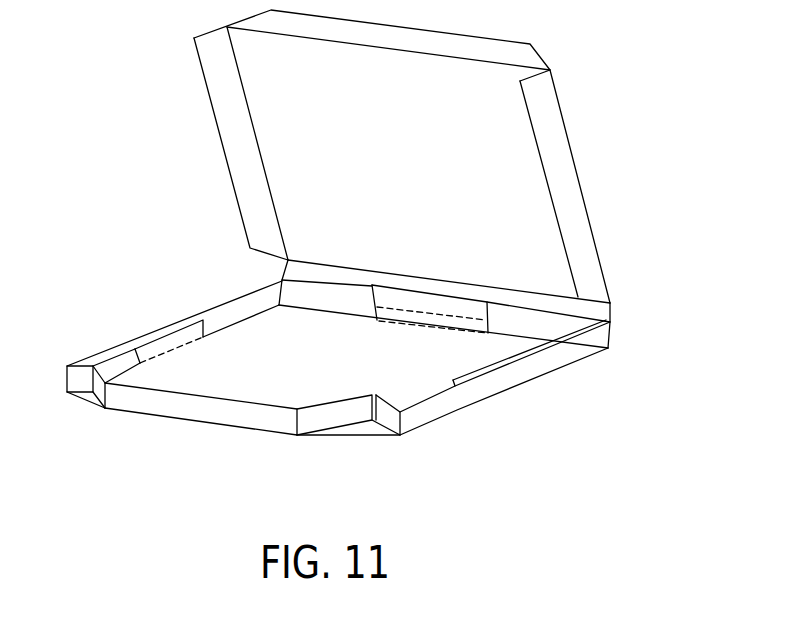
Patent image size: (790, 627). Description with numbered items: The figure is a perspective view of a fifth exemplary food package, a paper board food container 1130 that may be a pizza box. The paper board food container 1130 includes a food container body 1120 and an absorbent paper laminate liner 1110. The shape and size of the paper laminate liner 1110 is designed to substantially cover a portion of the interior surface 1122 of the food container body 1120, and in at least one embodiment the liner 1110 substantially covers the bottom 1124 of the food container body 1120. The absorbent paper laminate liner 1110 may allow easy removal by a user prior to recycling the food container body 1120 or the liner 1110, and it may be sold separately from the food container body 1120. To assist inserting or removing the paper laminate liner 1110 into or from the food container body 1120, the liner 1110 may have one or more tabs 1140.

The paper board food container 1130 is at (156, 92).
The food container body 1120 is at (582, 227).
The interior surface 1122 is at (305, 297).
The absorbent paper laminate liner 1110 is at (500, 348).
The bottom 1124 is at (368, 427).
The tabs 1140 is at (490, 302).